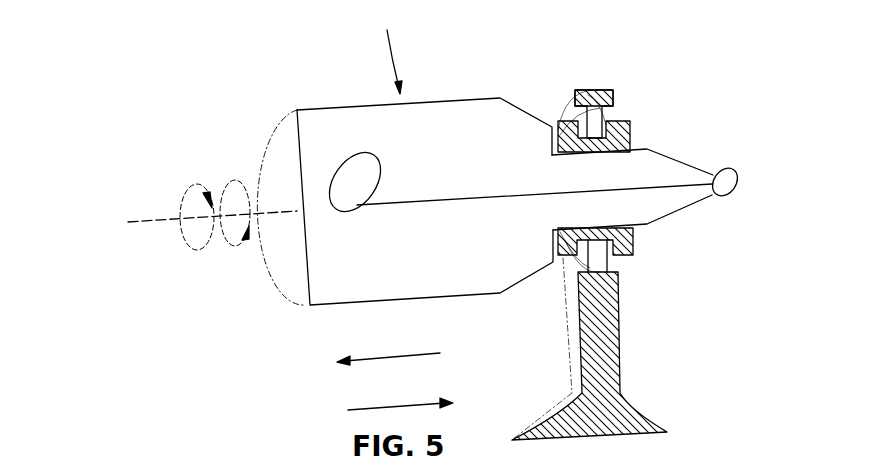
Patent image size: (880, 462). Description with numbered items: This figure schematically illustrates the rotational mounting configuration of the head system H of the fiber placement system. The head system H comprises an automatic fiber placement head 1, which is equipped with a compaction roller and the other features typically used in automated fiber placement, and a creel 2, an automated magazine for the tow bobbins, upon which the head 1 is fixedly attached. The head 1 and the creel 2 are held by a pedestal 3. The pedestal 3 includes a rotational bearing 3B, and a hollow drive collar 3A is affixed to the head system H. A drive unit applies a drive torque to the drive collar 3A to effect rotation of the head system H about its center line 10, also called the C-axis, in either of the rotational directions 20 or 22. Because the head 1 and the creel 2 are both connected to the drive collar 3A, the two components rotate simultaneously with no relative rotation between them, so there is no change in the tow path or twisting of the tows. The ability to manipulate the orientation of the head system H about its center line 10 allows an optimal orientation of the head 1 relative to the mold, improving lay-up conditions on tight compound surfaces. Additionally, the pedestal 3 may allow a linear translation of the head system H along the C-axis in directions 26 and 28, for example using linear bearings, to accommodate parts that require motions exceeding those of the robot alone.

The automatic fiber placement head 1 is at (688, 162).
The creel 2 is at (338, 120).
The pedestal 3 is at (613, 342).
The hollow drive collar 3A is at (630, 128).
The rotational bearing 3B is at (588, 90).
The center line 10 is at (141, 218).
The rotational direction 20 is at (187, 183).
The rotational direction 22 is at (222, 183).
The linear translation direction 26 is at (362, 408).
The linear translation direction 28 is at (370, 357).
The head system H is at (389, 48).